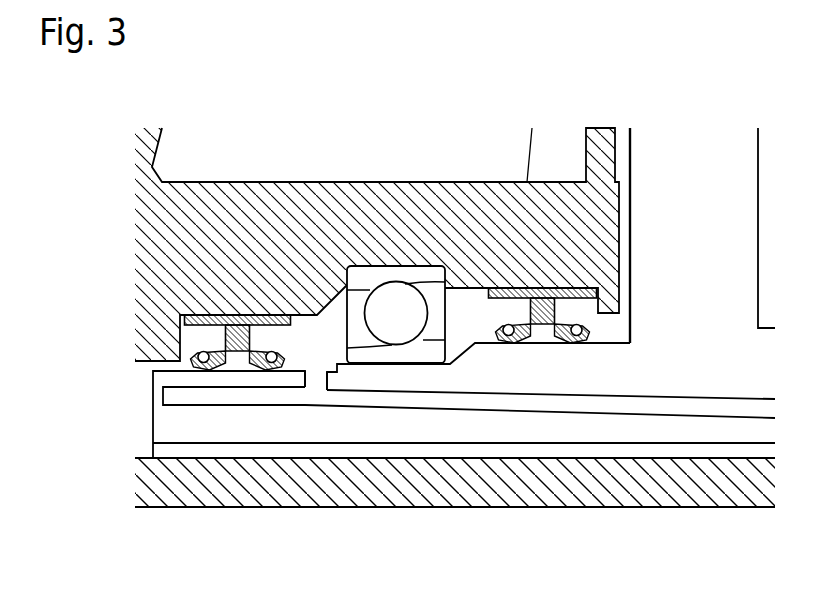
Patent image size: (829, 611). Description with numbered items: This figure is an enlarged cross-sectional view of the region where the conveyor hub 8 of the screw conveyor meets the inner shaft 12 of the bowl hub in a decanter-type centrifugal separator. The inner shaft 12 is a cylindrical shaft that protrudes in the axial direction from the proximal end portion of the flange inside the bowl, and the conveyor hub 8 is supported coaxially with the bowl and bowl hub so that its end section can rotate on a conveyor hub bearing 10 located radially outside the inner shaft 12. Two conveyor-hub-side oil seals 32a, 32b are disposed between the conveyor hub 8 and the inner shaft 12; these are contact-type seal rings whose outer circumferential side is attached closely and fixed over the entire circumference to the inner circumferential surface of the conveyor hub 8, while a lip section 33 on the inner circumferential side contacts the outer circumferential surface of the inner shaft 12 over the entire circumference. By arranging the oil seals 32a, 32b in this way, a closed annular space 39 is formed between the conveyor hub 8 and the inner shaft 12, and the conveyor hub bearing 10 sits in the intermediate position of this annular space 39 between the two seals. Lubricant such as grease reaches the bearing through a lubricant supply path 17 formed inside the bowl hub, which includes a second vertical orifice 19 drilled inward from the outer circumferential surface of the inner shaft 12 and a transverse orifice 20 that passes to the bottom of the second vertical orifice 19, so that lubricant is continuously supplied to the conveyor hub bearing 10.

The conveyor hub 8 is at (149, 267).
The conveyor hub bearing 10 is at (398, 292).
The inner shaft 12 is at (155, 417).
The lubricant supply path 17 is at (663, 402).
The second vertical orifice 19 is at (316, 378).
The transverse orifice 20 is at (424, 402).
The conveyor-hub-side oil seal 32a is at (541, 292).
The conveyor-hub-side oil seal 32b is at (238, 325).
The lip section 33 is at (548, 557).
The annular space 39 is at (468, 315).